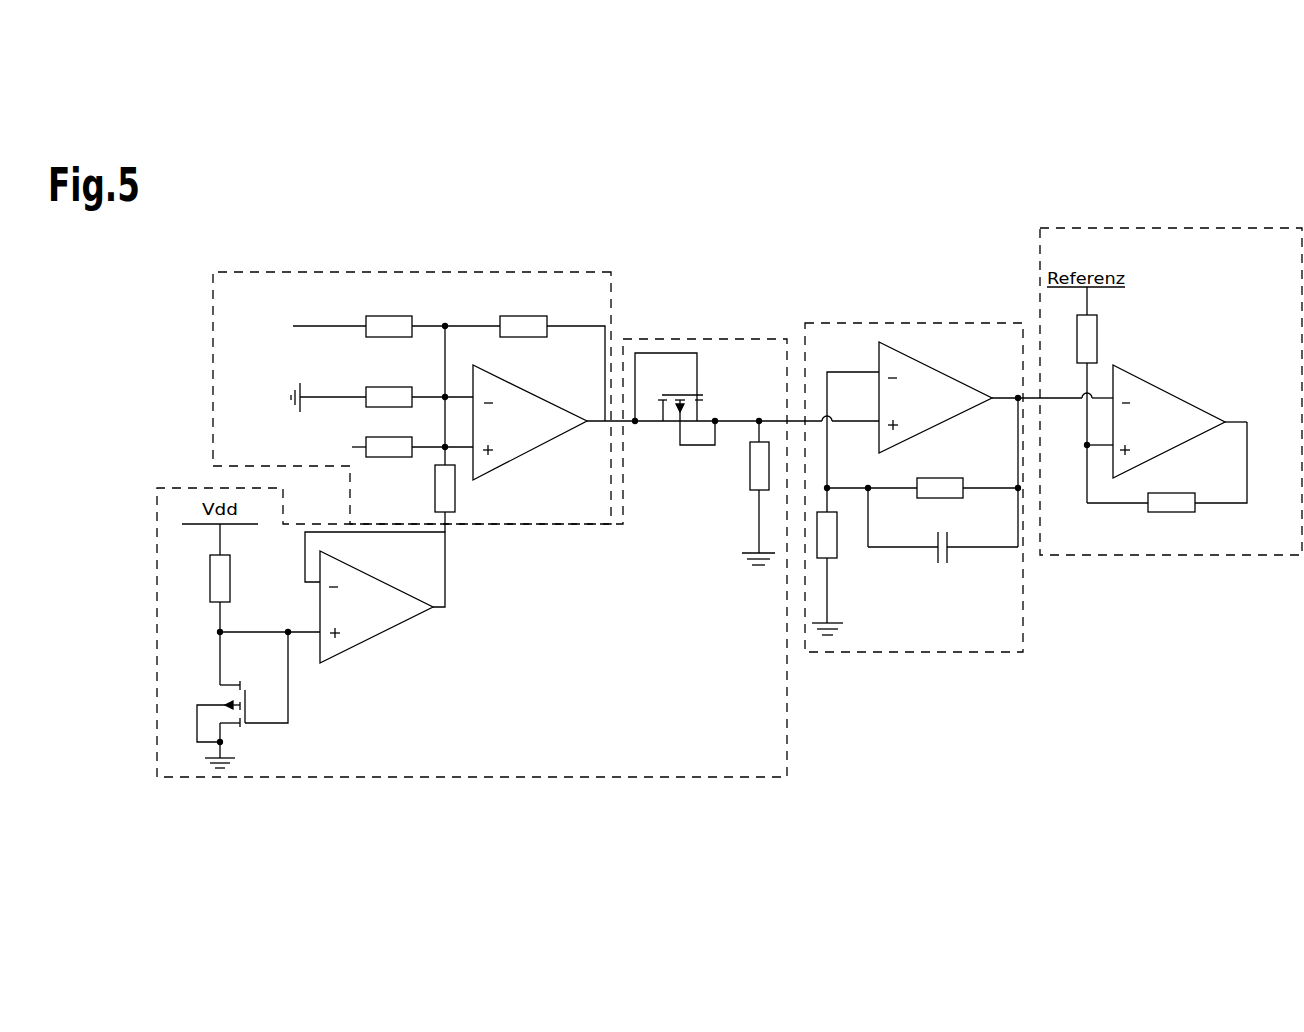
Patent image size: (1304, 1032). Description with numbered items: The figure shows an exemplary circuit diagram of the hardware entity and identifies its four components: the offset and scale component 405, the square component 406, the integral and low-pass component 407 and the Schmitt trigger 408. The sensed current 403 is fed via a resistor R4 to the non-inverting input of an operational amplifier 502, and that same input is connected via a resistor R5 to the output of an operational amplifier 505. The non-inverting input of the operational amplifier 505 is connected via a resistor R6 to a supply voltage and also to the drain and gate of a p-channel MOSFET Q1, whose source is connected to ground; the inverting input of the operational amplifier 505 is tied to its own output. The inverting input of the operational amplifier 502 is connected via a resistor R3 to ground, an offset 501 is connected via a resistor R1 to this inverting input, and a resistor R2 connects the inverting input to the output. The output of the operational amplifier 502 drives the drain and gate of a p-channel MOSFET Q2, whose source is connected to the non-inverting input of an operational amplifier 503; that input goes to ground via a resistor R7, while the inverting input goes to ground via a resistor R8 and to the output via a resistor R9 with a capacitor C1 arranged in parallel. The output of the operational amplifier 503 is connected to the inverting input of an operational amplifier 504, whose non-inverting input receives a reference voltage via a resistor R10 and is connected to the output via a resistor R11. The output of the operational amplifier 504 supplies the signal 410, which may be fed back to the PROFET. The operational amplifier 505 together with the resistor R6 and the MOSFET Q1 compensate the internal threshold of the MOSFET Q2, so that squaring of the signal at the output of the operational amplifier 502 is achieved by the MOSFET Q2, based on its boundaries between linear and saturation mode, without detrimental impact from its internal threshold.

The offset and scale component 405 is at (493, 272).
The square component 406 is at (697, 340).
The integral and low-pass component 407 is at (877, 322).
The Schmitt trigger 408 is at (1180, 555).
The offset 501 is at (299, 322).
The operational amplifier 502 is at (530, 429).
The operational amplifier 503 is at (935, 392).
The operational amplifier 504 is at (1169, 418).
The operational amplifier (reference voltage) 505 is at (711, 458).
The sensed current 403 is at (329, 447).
The signal 410 is at (1260, 425).
The resistor R1 is at (389, 308).
The resistor R2 is at (523, 309).
The resistor R3 is at (389, 381).
The resistor R4 is at (385, 465).
The resistor R5 is at (466, 492).
The resistor R6 is at (200, 578).
The resistor R7 is at (739, 460).
The resistor R8 is at (844, 547).
The resistor R9 is at (940, 475).
The resistor R10 is at (1112, 339).
The resistor R11 is at (1171, 521).
The capacitor C1 is at (943, 570).
The p-channel MOSFET Q1 is at (206, 707).
The p-channel MOSFET Q2 is at (675, 418).